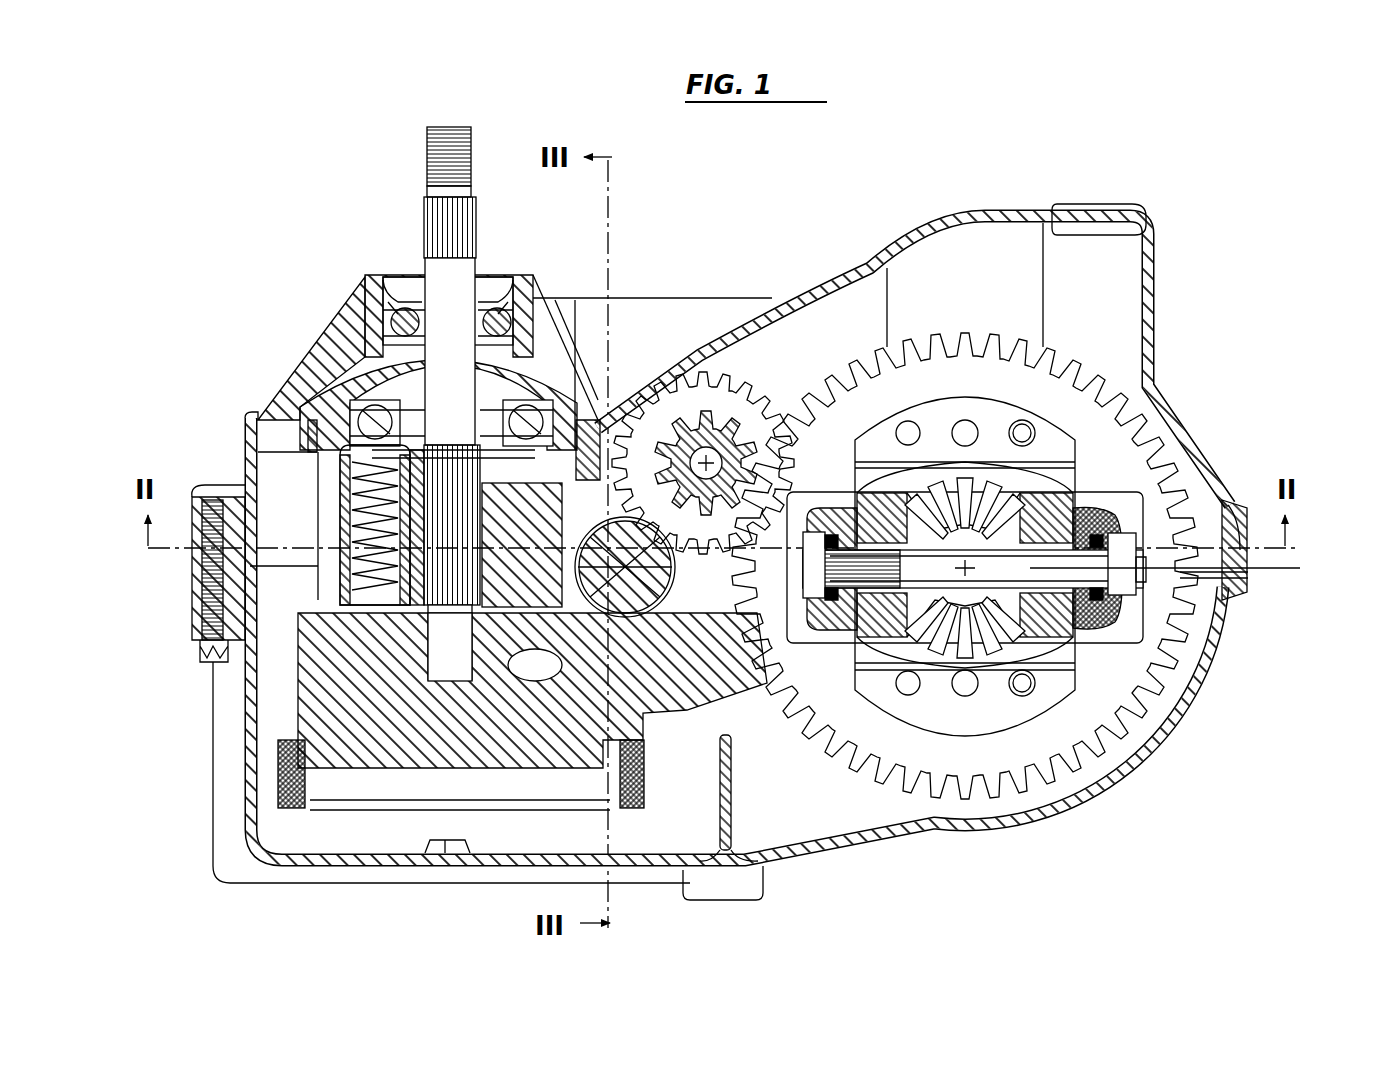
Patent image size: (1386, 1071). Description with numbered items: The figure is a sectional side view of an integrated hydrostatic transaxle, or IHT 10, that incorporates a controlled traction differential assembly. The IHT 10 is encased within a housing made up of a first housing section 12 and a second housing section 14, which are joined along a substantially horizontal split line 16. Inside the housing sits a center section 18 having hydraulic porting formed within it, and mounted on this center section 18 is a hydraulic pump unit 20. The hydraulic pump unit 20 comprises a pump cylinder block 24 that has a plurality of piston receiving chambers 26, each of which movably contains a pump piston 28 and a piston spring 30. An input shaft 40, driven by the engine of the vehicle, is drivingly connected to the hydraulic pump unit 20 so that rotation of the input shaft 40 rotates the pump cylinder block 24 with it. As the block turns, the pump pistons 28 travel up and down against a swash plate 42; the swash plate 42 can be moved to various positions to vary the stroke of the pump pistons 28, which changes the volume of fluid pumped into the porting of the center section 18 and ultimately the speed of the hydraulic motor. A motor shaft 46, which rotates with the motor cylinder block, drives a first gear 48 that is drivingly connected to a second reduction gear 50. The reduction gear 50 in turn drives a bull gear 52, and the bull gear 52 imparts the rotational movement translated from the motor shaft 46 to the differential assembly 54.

The IHT 10 is at (759, 194).
The first housing section 12 is at (1225, 515).
The second housing section 14 is at (1238, 590).
The split line 16 is at (1250, 575).
The center section 18 is at (355, 722).
The hydraulic pump unit 20 is at (290, 502).
The pump cylinder block 24 is at (582, 412).
The piston receiving chambers 26 is at (335, 586).
The pump piston 28 is at (345, 385).
The piston spring 30 is at (333, 488).
The input shaft 40 is at (440, 180).
The swash plate 42 is at (555, 392).
The motor shaft 46 is at (755, 680).
The first gear 48 is at (695, 378).
The second reduction gear 50 is at (745, 470).
The bull gear 52 is at (910, 345).
The differential assembly 54 is at (1012, 660).